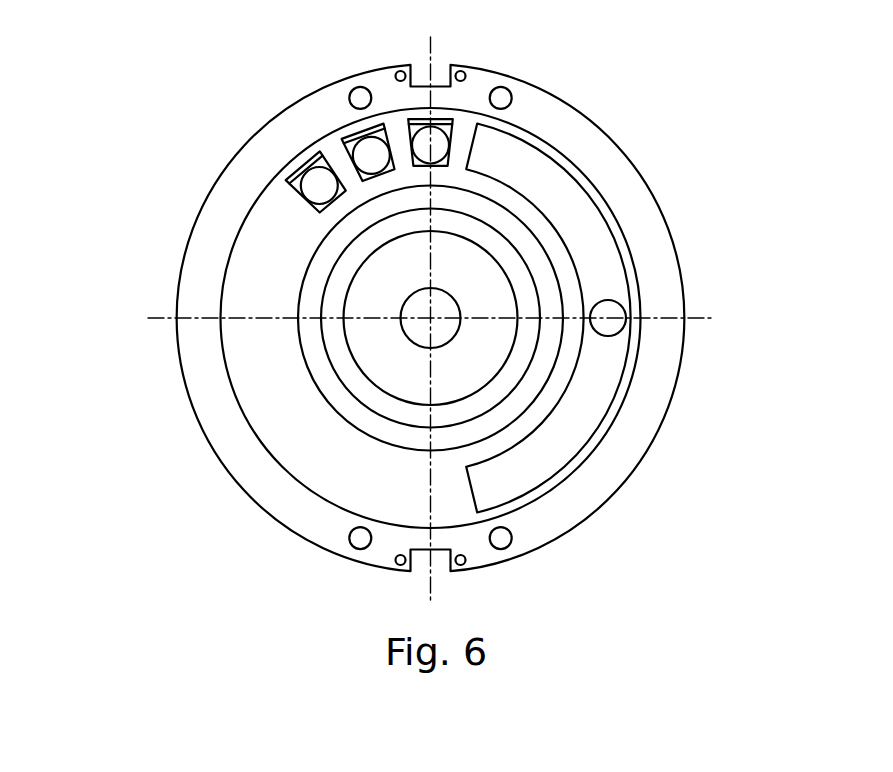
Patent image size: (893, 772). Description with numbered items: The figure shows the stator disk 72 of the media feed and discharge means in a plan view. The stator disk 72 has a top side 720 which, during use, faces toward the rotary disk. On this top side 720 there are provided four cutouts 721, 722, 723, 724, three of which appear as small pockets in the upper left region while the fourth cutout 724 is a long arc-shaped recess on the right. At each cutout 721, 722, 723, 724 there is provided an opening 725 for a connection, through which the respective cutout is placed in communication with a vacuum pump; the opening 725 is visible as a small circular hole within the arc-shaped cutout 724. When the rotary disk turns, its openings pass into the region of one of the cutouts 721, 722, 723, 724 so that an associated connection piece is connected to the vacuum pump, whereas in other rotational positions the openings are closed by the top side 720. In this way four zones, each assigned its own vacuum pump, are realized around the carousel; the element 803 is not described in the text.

The stator disk 72 is at (136, 78).
The top side 720 is at (290, 432).
The cutout 721 is at (322, 170).
The cutout 722 is at (356, 124).
The cutout 723 is at (421, 131).
The cutout 724 is at (580, 217).
The opening 725 is at (612, 327).
The cylindrical element in slot 803 is at (447, 133).